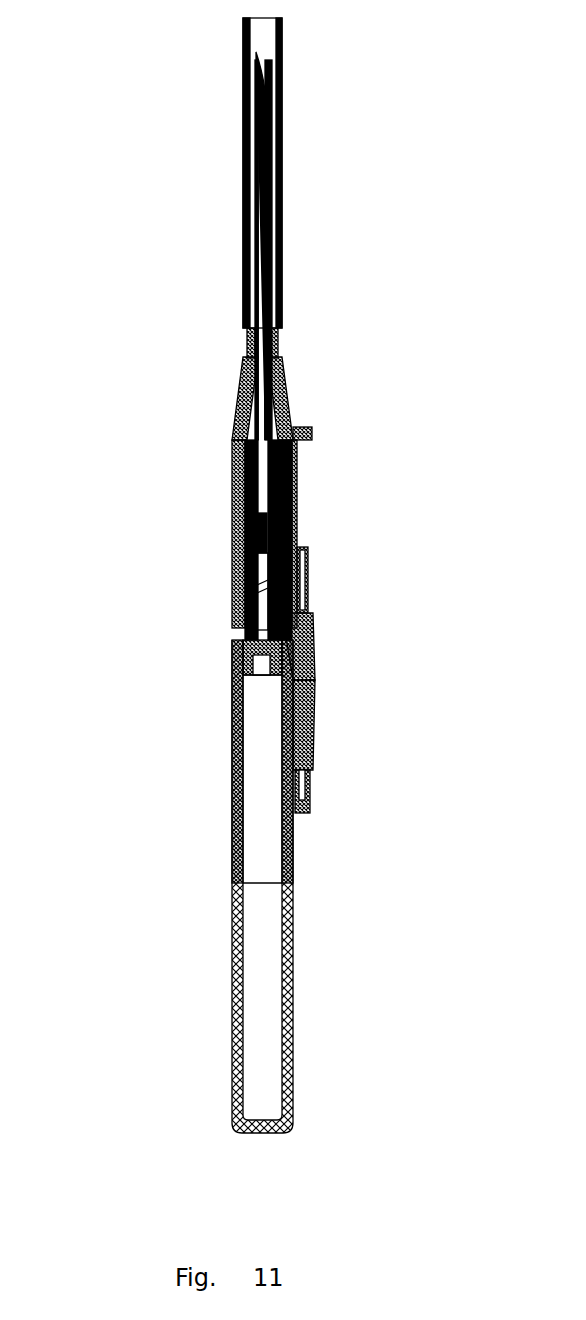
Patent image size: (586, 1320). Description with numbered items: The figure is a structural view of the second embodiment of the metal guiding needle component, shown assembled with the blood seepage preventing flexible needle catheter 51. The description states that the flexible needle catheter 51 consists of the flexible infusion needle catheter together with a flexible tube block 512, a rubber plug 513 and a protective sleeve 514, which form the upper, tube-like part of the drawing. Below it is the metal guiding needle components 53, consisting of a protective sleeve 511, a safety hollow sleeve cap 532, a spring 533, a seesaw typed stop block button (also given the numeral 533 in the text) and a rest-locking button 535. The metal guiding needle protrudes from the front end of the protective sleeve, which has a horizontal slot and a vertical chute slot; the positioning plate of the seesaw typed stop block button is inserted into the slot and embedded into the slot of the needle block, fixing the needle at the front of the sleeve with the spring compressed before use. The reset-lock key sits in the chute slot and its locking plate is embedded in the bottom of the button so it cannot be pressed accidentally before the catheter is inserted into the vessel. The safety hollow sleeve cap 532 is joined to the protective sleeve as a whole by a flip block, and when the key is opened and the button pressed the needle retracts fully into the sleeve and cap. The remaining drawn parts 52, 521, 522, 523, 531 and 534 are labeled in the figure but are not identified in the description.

The blood seepage preventing flexible needle catheter 51 is at (255, 435).
The sleeve body 52 is at (235, 582).
The metal guiding needle components 53 is at (253, 759).
The protective sleeve 511 is at (272, 233).
The flexible tube block 512 is at (289, 372).
The rubber plug 513 is at (305, 432).
The protective sleeve 514 is at (282, 297).
The needle 521 is at (258, 177).
The right core 522 is at (293, 528).
The side rib 523 is at (300, 608).
The bracket 531 is at (300, 800).
The safety hollow sleeve cap 532 is at (295, 952).
The spring 533 is at (293, 507).
The side block upper 534 is at (319, 626).
The rest-locking button 535 is at (319, 744).